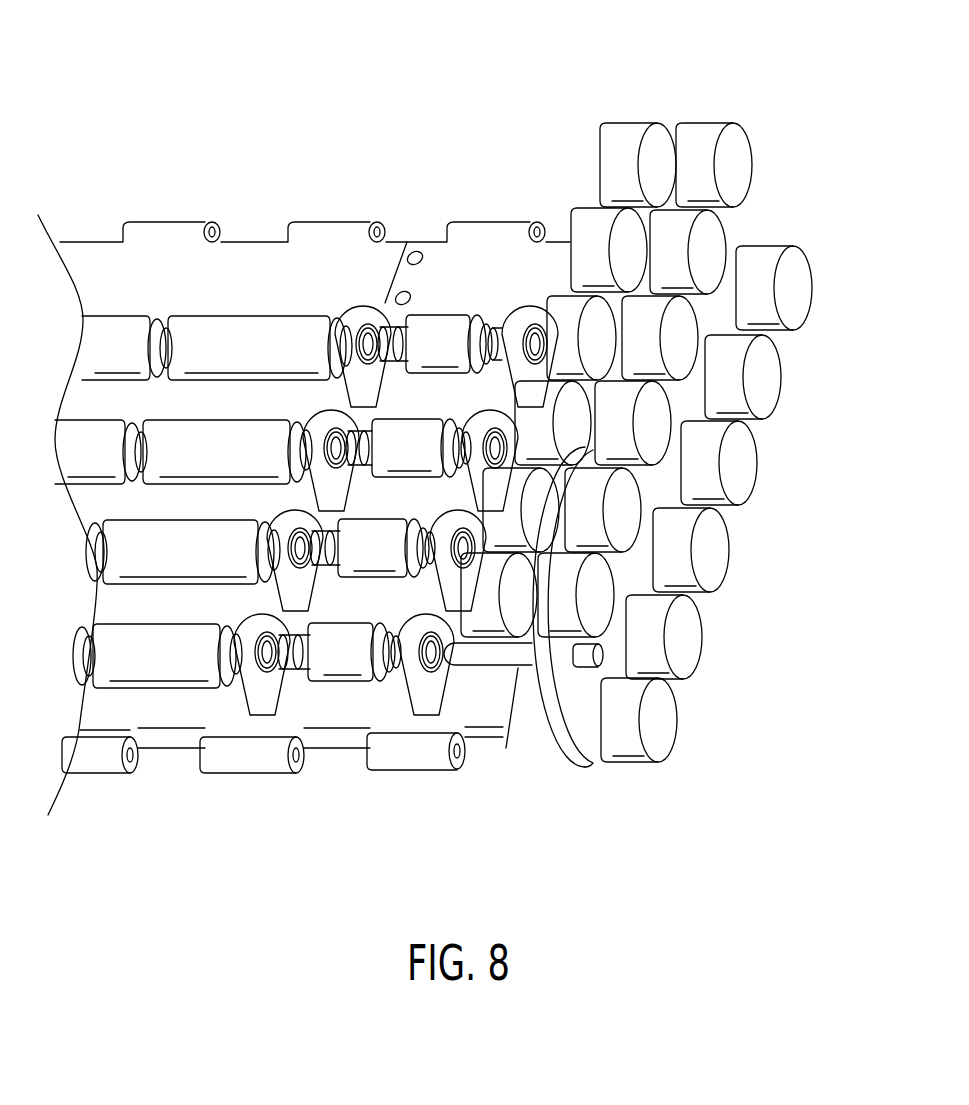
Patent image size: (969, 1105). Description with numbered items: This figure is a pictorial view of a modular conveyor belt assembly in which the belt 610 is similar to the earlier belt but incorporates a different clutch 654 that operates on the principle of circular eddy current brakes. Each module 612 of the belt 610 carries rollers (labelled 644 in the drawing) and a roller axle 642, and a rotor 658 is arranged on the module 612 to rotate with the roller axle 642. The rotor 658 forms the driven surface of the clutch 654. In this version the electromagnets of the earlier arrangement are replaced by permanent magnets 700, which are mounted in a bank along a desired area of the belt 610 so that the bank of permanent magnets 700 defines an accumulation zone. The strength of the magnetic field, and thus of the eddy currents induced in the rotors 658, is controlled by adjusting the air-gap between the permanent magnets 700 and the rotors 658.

The belt 610 is at (258, 122).
The module 612 is at (324, 238).
The belt rollers 644 is at (230, 335).
The roller axle 642 is at (490, 658).
The rotor 658 is at (583, 742).
The clutch 654 is at (768, 110).
The permanent magnets 700 is at (710, 147).